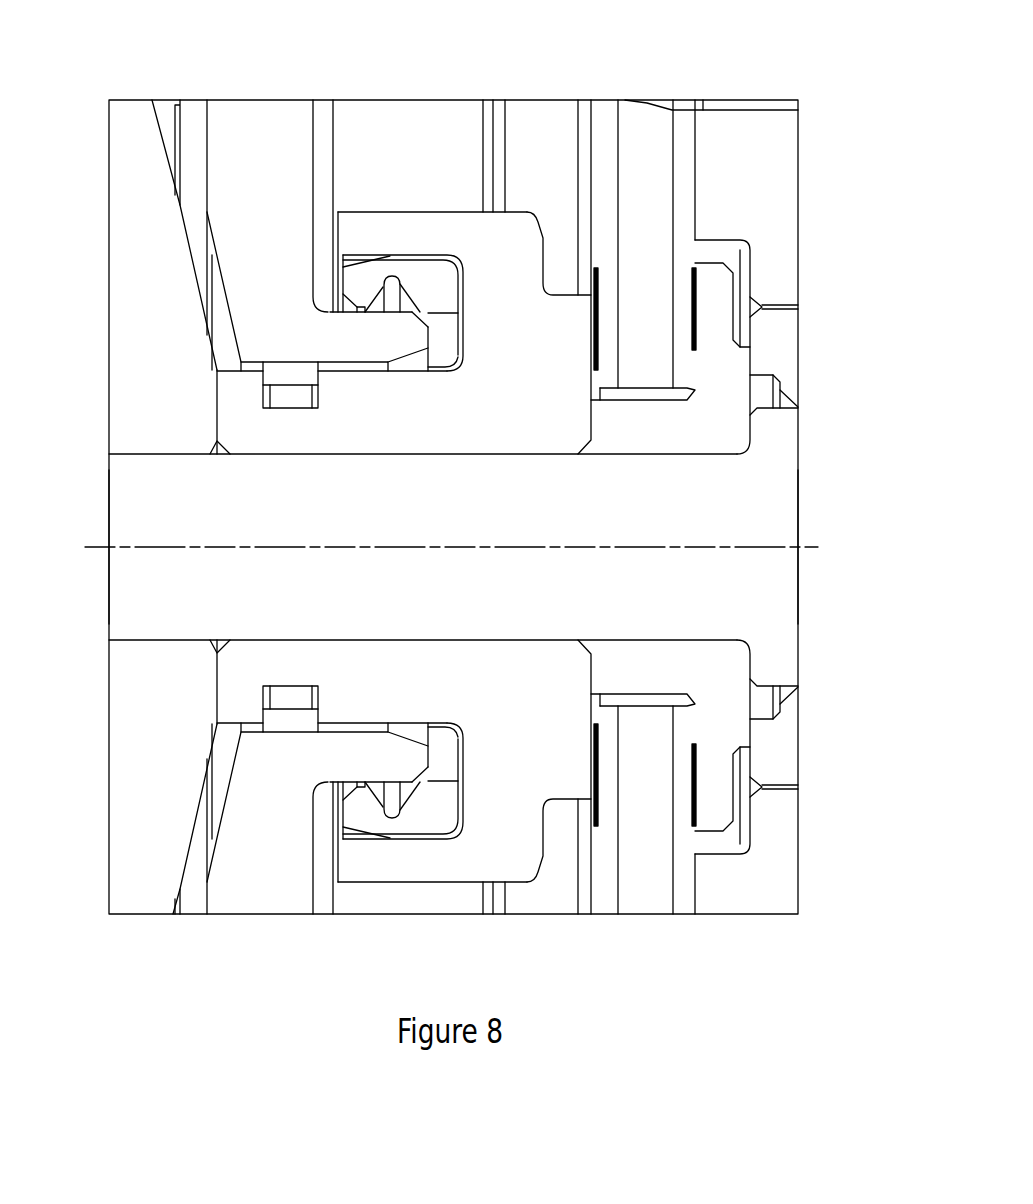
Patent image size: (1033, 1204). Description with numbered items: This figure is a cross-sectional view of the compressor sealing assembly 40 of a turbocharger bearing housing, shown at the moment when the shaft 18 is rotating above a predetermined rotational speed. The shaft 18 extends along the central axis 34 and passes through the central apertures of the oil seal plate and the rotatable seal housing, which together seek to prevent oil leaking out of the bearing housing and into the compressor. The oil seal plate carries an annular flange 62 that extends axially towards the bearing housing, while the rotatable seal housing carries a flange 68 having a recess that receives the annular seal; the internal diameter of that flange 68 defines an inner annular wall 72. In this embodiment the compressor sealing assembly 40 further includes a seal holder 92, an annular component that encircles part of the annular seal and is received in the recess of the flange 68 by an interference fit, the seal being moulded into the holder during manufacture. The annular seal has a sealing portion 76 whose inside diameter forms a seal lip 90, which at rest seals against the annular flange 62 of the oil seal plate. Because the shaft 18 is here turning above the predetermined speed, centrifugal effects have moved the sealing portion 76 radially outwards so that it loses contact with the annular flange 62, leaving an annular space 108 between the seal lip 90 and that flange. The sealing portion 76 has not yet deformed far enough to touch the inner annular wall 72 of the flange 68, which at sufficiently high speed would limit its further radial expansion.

The shaft 18 is at (773, 615).
The axis 34 is at (807, 547).
The compressor sealing assembly 40 is at (548, 87).
The annular flange 62 is at (395, 755).
The flange 68 is at (413, 863).
The inner annular wall 72 is at (350, 838).
The sealing portion 76 is at (358, 282).
The seal lip 90 is at (363, 782).
The seal holder 92 is at (362, 268).
The annular space 108 is at (320, 312).